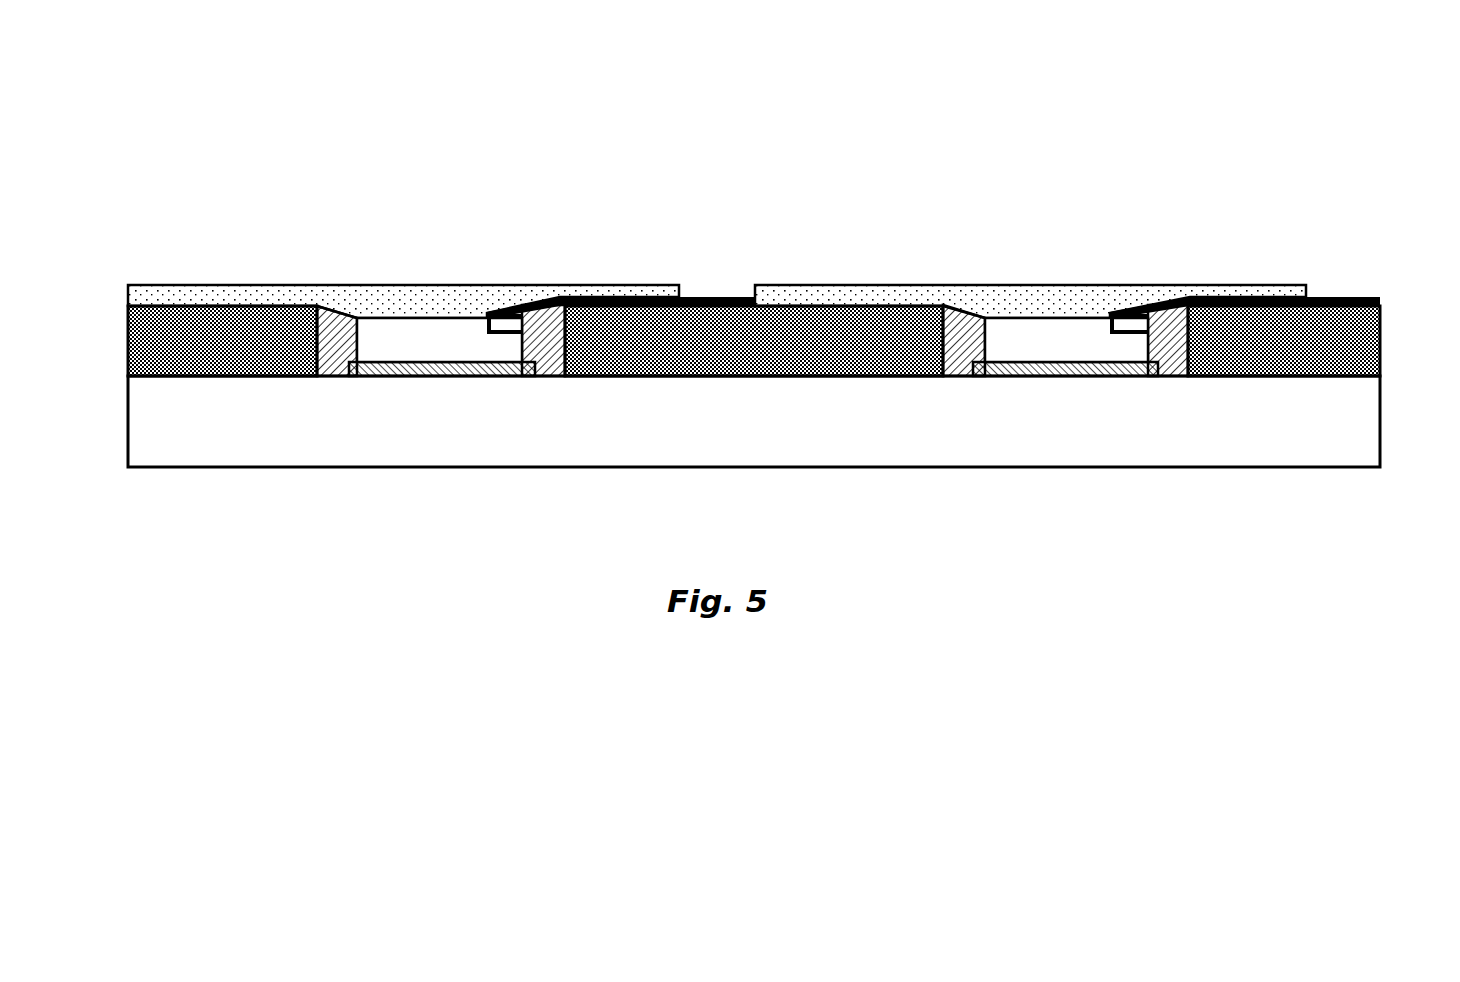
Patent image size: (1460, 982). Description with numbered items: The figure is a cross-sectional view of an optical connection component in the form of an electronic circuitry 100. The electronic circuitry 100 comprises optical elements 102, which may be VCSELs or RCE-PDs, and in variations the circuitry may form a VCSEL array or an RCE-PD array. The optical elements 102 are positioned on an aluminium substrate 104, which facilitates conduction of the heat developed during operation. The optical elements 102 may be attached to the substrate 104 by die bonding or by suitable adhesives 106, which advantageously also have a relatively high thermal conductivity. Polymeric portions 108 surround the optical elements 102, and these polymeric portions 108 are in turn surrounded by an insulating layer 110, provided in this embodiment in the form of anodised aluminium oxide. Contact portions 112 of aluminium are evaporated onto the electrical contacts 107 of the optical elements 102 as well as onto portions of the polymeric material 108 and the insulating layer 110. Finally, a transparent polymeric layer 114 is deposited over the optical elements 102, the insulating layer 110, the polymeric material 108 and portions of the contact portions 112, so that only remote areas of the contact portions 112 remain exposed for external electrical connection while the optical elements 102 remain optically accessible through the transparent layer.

The electronic circuitry 100 is at (829, 156).
The optical elements 102 is at (427, 340).
The aluminium substrate 104 is at (287, 422).
The adhesives 106 is at (390, 377).
The electrical contacts 107 is at (505, 312).
The polymeric portions 108 is at (327, 320).
The insulating layer 110 is at (228, 340).
The contact portions 112 is at (630, 297).
The transparent polymeric layer 114 is at (167, 300).